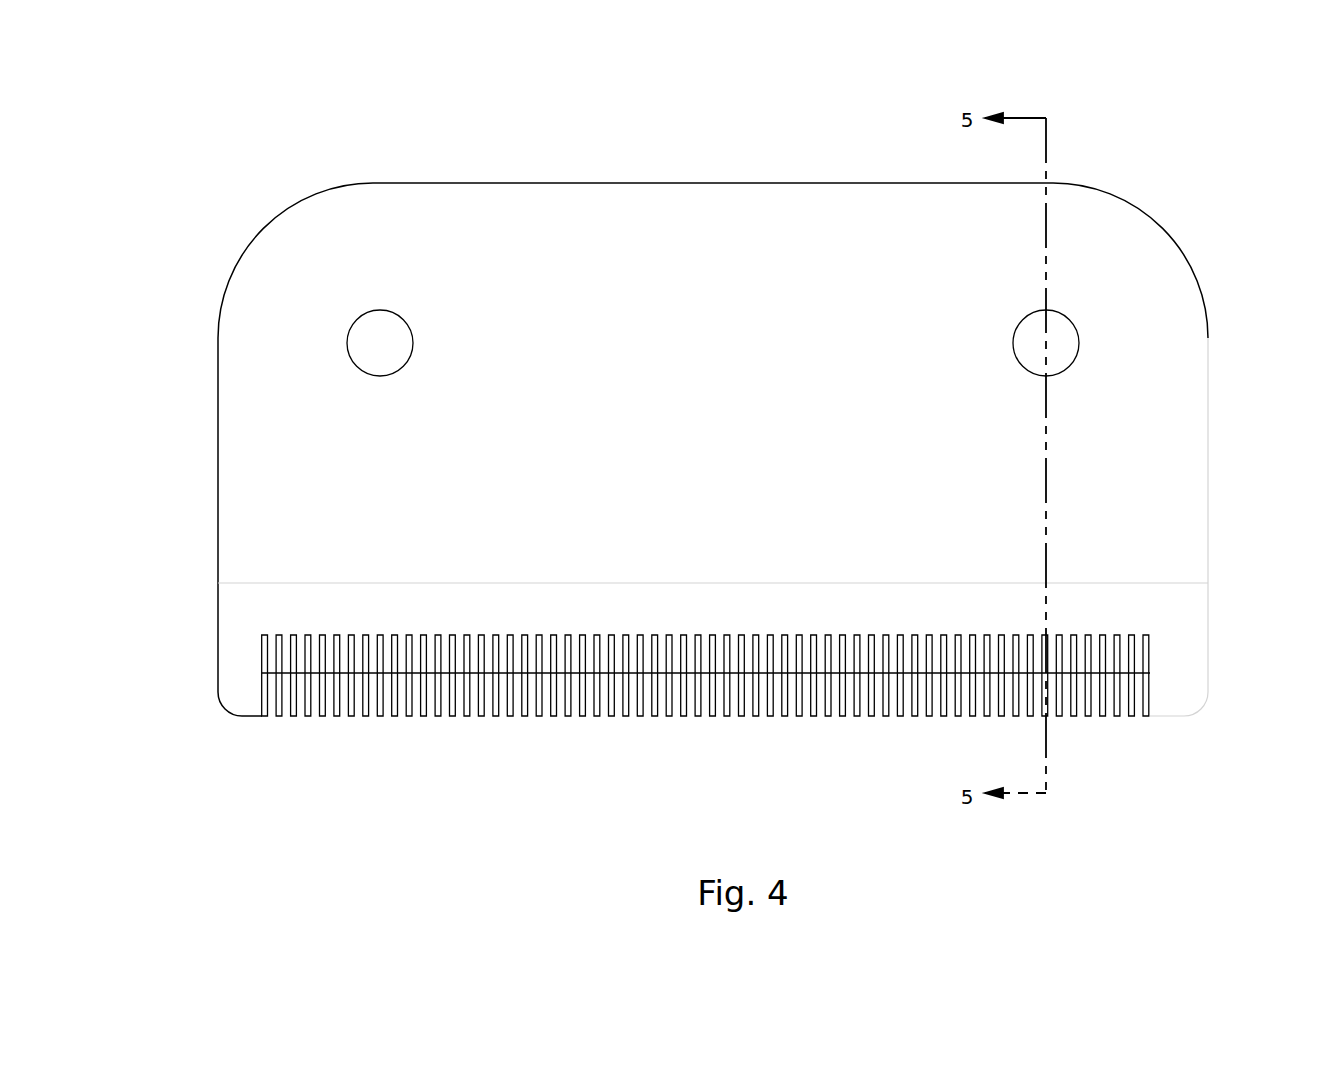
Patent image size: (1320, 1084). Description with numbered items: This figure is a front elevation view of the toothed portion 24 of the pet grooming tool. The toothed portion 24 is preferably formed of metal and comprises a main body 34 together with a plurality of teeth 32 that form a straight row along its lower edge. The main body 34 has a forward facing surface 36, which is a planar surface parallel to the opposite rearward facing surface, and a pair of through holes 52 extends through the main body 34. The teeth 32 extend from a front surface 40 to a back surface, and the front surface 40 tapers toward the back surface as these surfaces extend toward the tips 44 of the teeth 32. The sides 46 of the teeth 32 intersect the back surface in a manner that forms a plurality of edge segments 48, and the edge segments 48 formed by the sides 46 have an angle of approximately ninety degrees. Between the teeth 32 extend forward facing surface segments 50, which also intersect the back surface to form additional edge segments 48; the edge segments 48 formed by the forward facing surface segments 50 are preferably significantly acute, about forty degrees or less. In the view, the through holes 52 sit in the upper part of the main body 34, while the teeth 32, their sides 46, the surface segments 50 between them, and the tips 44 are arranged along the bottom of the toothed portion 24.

The toothed portion 24 is at (535, 152).
The teeth 32 is at (590, 716).
The main body 34 is at (740, 227).
The forward facing surface 36 is at (833, 240).
The front surface 40 is at (1180, 617).
The tips 44 is at (750, 716).
The sides 46 is at (332, 773).
The edge segments 48 is at (267, 686).
The forward facing surface segments 50 is at (310, 645).
The through holes 52 is at (371, 329).